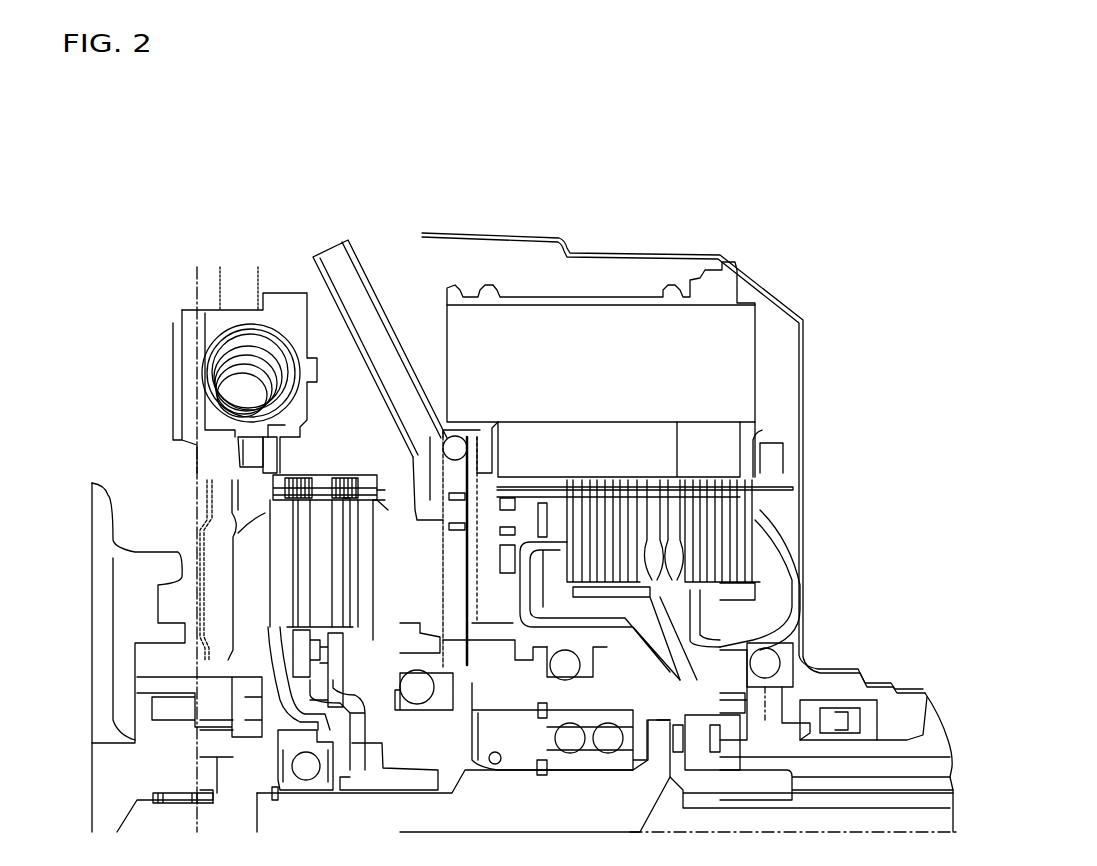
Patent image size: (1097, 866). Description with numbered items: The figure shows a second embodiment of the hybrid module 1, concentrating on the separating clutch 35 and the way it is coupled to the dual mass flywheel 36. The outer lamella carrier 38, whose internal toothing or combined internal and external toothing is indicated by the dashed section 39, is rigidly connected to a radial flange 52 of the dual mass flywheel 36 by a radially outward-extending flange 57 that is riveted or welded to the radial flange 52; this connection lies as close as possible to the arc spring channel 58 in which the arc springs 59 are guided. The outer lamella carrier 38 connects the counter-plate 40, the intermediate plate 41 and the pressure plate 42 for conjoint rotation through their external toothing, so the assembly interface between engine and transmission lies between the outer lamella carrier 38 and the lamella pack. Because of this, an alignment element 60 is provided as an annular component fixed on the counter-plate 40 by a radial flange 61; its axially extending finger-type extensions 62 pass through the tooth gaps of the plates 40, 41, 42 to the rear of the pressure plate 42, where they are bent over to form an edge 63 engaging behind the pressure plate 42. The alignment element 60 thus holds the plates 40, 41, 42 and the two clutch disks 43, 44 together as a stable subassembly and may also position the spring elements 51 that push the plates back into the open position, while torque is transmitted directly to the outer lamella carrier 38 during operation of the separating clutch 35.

The hybrid module 1 is at (620, 205).
The separating clutch 35 is at (343, 466).
The dual mass flywheel 36 is at (233, 277).
The outer lamella carrier 38 is at (290, 475).
The section 39 is at (375, 490).
The counter-plate 40 is at (280, 678).
The intermediate plate 41 is at (320, 607).
The pressure plate 42 is at (347, 573).
The clutch disk 43 is at (290, 543).
The clutch disk 44 is at (367, 582).
The spring element 51 is at (333, 475).
The radial flange 52 is at (243, 447).
The flange 57 is at (273, 467).
The arc spring channel 58 is at (282, 327).
The arc spring 59 is at (215, 360).
The alignment element 60 is at (258, 516).
The radial flange 61 is at (262, 518).
The extension 62 is at (345, 498).
The edge 63 is at (375, 500).